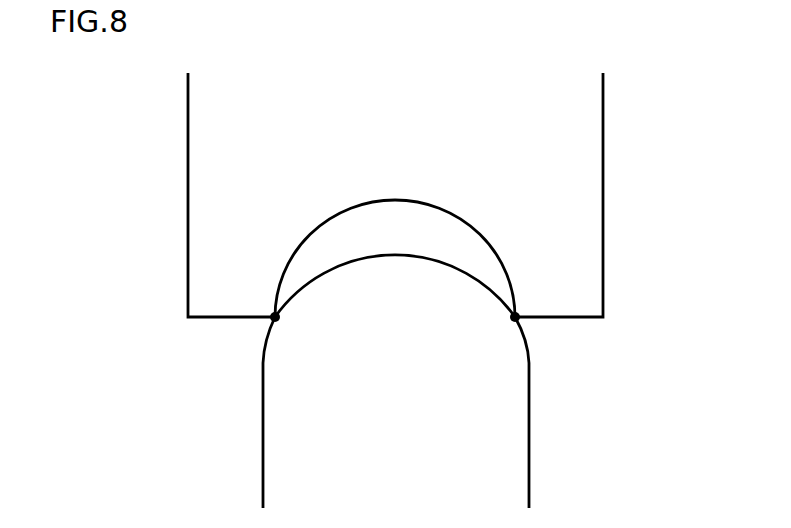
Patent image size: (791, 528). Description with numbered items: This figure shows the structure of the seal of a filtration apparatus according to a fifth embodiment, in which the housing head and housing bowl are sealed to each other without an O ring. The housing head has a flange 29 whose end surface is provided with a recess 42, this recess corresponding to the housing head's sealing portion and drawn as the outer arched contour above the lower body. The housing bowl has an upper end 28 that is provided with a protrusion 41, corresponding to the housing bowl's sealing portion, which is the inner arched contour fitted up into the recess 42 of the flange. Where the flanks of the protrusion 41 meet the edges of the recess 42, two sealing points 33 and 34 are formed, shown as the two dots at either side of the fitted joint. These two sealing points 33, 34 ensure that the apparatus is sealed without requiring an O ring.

The flange 29 is at (255, 133).
The recess 42 is at (444, 207).
The protrusion 41 is at (395, 257).
The upper end 28 is at (473, 460).
The sealing point 33 is at (272, 320).
The sealing point 34 is at (518, 320).